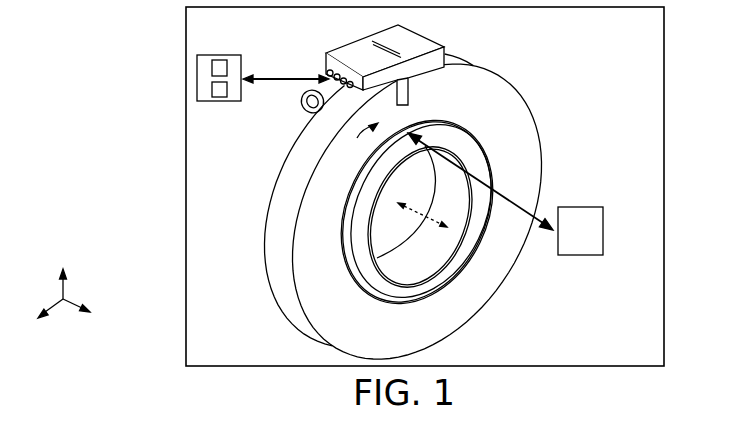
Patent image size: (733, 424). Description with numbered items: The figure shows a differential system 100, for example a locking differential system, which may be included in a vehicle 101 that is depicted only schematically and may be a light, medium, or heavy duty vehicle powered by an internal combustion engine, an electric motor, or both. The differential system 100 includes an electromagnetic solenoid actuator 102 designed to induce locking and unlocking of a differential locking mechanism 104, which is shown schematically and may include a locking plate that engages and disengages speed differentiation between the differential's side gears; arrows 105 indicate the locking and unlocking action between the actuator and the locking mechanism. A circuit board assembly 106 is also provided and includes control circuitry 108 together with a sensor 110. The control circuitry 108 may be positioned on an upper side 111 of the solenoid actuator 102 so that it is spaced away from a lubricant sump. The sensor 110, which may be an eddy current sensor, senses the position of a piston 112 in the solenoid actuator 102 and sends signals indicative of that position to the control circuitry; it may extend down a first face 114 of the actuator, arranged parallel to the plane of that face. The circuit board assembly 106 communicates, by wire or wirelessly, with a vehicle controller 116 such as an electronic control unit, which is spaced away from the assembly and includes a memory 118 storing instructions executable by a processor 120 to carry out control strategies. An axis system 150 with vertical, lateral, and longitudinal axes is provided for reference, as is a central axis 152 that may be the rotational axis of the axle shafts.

The differential system 100 is at (623, 54).
The vehicle 101 is at (186, 42).
The electromagnetic solenoid actuator 102 is at (551, 121).
The differential locking mechanism 104 is at (603, 236).
The arrows 105 is at (509, 200).
The circuit board assembly 106 is at (294, 67).
The control circuitry 108 is at (353, 58).
The sensor 110 is at (431, 88).
The upper side 111 is at (459, 35).
The piston 112 is at (371, 285).
The first face 114 is at (360, 141).
The vehicle controller 116 is at (200, 103).
The memory 118 is at (212, 91).
The processor 120 is at (212, 68).
The axis system 150 is at (90, 283).
The central axis 152 is at (431, 220).